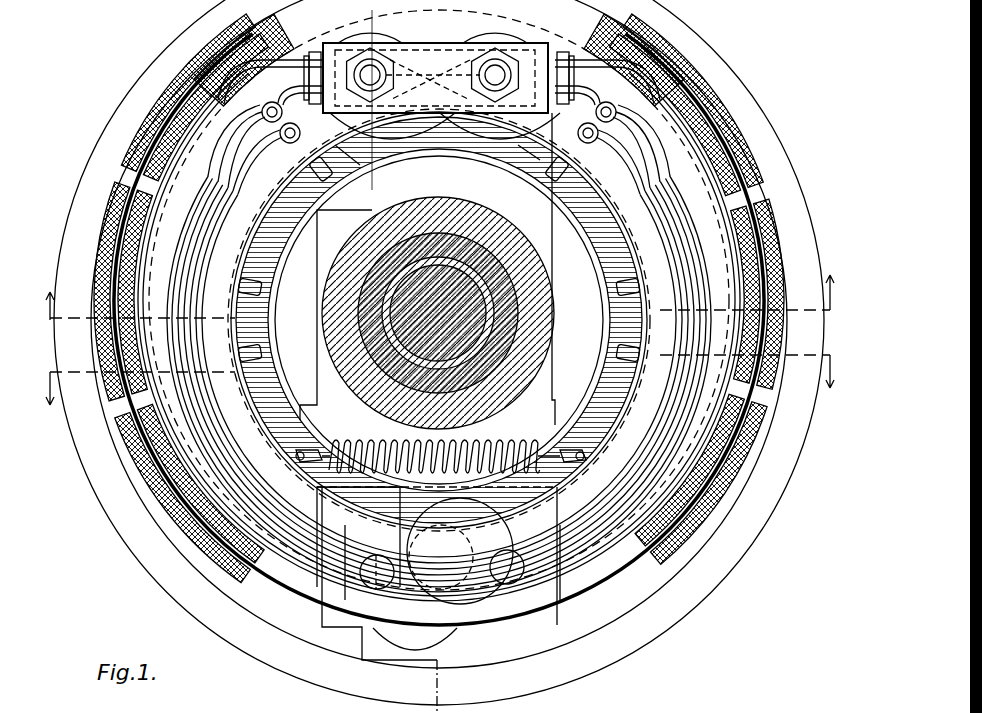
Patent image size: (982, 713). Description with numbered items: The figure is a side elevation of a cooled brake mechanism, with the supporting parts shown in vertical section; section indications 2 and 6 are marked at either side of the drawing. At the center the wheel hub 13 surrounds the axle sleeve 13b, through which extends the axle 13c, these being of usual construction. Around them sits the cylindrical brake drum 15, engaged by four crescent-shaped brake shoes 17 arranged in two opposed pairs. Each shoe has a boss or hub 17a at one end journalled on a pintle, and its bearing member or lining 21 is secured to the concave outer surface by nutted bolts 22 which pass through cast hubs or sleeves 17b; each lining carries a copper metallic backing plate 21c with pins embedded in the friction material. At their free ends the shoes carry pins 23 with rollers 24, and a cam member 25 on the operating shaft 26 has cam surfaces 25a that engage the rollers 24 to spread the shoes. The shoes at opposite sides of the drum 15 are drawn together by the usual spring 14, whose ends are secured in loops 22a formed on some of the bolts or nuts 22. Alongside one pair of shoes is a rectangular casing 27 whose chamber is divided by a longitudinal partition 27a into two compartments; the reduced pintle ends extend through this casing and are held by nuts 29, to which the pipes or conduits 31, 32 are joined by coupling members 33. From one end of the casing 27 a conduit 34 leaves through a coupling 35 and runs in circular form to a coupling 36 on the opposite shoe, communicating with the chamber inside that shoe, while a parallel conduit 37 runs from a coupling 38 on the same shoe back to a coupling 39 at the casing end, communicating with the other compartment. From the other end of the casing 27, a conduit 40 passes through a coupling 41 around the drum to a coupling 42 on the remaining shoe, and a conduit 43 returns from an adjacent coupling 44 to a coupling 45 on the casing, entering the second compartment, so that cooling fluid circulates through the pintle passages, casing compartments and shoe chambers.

The section line 2- 2 is at (436, 369).
The section line 6- 6 is at (436, 283).
The wheel hub 13 is at (538, 355).
The axle sleeve 13b is at (462, 248).
The axle 13c is at (470, 285).
The spring 14 is at (500, 438).
The brake drum 15 is at (662, 2).
The brake shoes 17 is at (598, 212).
The boss or hub of shoe 17a is at (460, 138).
The cast hub or sleeve 17b is at (310, 500).
The bearing member or lining 21 is at (255, 592).
The metallic backing plate 21c is at (448, 701).
The nutted bolts 22 is at (318, 180).
The loops 22a is at (310, 450).
The pins 23 is at (375, 555).
The rollers 24 is at (352, 545).
The cam member 25 is at (460, 500).
The cam surfaces 25a is at (495, 505).
The operating shaft 26 is at (438, 552).
The casing 27 is at (430, 118).
The partition 27a is at (435, 78).
The nuts 29 is at (370, 48).
The pipe or conduit 31 is at (433, 75).
The pipe or conduit 32 is at (370, 108).
The coupling members 33 is at (430, 73).
The conduit 34 is at (580, 222).
The coupling 35 is at (330, 110).
The coupling 36 is at (549, 147).
The conduit 37 is at (258, 42).
The coupling 38 is at (588, 112).
The coupling 39 is at (318, 58).
The conduit 40 is at (652, 131).
The coupling 41 is at (552, 110).
The coupling 42 is at (321, 148).
The conduit 43 is at (715, 140).
The coupling 44 is at (282, 112).
The coupling 45 is at (560, 58).